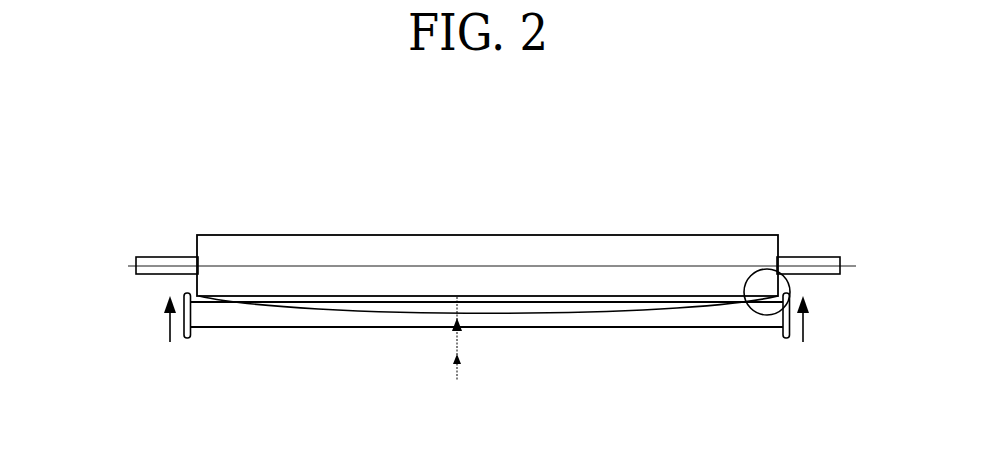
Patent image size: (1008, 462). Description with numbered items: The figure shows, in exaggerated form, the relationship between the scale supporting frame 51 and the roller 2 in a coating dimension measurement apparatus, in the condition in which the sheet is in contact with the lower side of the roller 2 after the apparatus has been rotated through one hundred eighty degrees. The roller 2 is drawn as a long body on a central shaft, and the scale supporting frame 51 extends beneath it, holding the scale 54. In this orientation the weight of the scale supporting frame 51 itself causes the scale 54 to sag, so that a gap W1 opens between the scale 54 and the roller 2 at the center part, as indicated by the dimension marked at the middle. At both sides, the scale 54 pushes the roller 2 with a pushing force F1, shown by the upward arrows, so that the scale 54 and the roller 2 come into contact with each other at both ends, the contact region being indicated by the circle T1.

The roller 2 is at (328, 234).
The scale supporting frame 51 is at (247, 327).
The scale 54 is at (376, 313).
The circle T1 is at (749, 270).
The gap W1 is at (487, 305).
The pushing force F1 is at (167, 327).